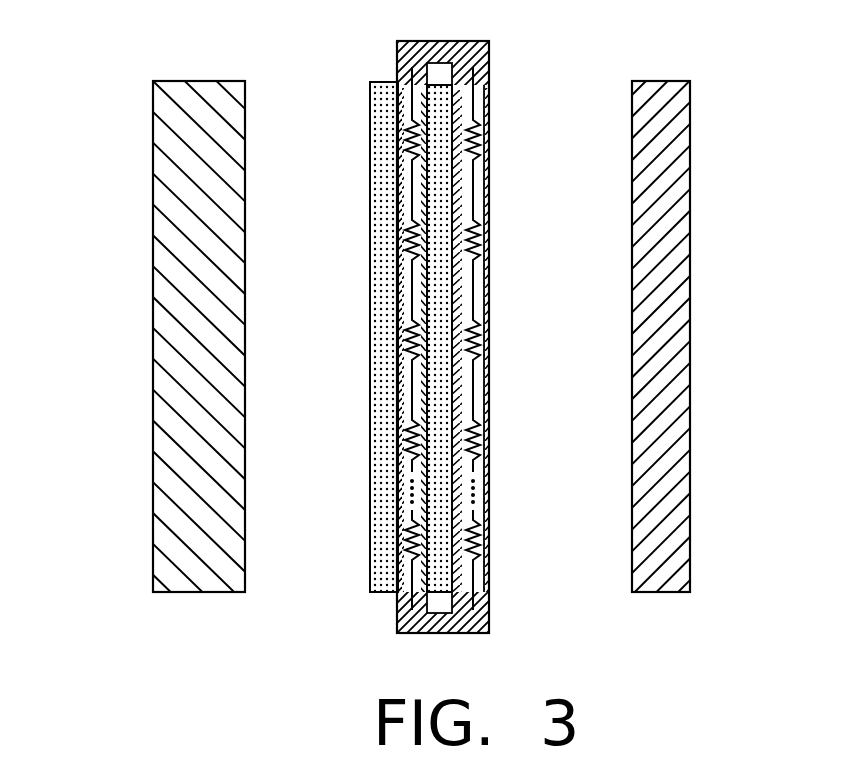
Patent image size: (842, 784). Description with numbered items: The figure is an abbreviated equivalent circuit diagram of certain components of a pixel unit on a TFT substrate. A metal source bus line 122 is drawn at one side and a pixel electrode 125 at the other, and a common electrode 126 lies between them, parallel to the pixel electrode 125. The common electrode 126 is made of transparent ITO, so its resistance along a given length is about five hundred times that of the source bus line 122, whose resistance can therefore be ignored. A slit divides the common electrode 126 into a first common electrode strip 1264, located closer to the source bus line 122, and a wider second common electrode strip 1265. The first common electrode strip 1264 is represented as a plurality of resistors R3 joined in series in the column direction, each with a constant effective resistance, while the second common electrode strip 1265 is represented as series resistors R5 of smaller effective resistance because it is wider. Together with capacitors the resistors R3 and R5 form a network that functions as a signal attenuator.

The source bus line 122 is at (170, 452).
The pixel electrode 125 is at (683, 230).
The common electrode 126 is at (434, 361).
The first common electrode strip 1264 is at (407, 174).
The second common electrode strip 1265 is at (478, 203).
The resistor R3 is at (407, 346).
The resistor R5 is at (478, 143).